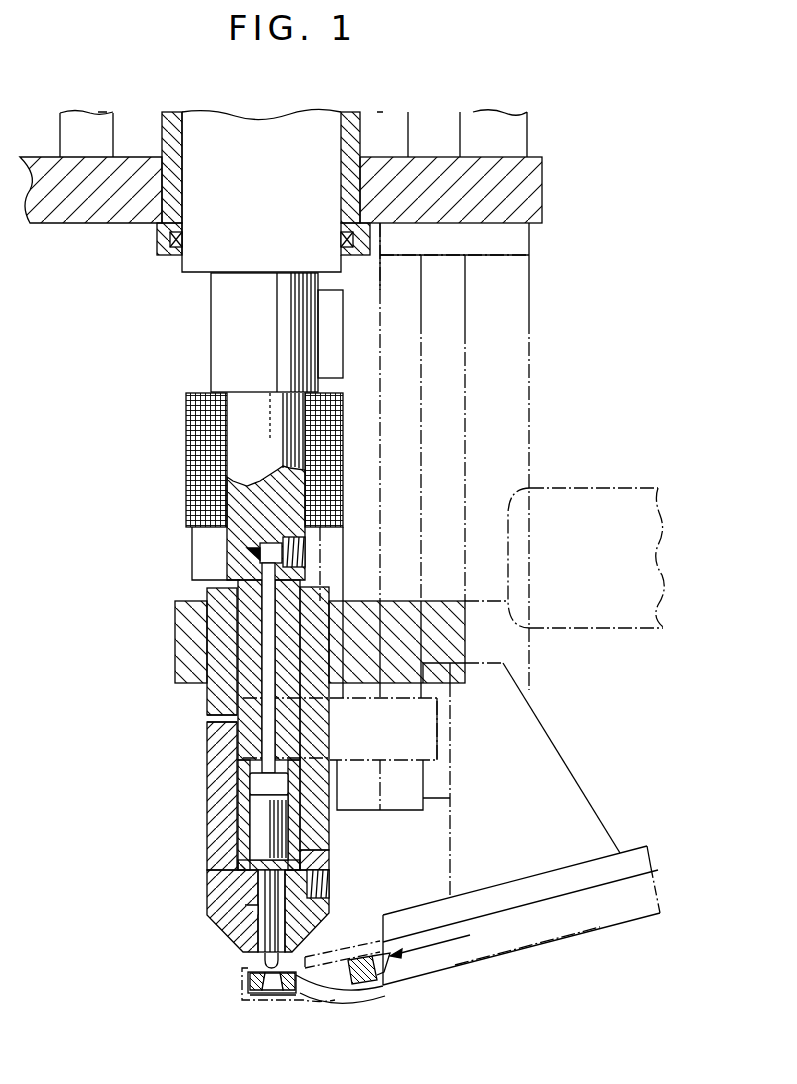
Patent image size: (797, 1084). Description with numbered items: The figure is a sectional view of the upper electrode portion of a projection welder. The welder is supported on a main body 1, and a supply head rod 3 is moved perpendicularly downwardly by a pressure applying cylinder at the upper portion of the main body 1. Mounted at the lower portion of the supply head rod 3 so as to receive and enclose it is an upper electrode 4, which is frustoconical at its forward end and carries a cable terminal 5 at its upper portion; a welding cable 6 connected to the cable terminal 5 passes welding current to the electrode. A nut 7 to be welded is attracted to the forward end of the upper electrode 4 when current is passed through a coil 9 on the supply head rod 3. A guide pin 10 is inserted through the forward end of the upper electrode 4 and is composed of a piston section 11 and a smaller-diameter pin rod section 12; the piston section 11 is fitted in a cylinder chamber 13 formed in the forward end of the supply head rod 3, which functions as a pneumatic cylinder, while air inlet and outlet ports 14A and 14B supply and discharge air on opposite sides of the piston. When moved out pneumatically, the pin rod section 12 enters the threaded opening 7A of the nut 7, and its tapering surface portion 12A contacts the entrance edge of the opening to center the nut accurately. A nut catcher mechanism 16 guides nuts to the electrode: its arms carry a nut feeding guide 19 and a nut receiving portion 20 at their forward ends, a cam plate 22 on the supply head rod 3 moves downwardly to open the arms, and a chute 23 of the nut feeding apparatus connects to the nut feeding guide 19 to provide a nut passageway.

The main body 1 is at (542, 178).
The supply head rod 3 is at (216, 340).
The upper electrode 4 is at (215, 930).
The cable terminal 5 is at (185, 650).
The welding cable 6 is at (622, 628).
The nut 7 is at (298, 979).
The threaded opening 7A is at (275, 993).
The coil 9 is at (200, 430).
The guide pin 10 is at (268, 885).
The piston section 11 is at (258, 828).
The pin rod section 12 is at (264, 930).
The tapering surface portion 12A is at (278, 964).
The cylinder chamber 13 is at (253, 783).
The air inlet and outlet port 14A is at (320, 888).
The air inlet and outlet port 14B is at (305, 548).
The nut catcher mechanism 16 is at (360, 991).
The nut feeding guide 19 is at (337, 990).
The nut receiving portion 20 is at (240, 977).
The cam plate 22 is at (319, 800).
The chute 23 is at (600, 928).